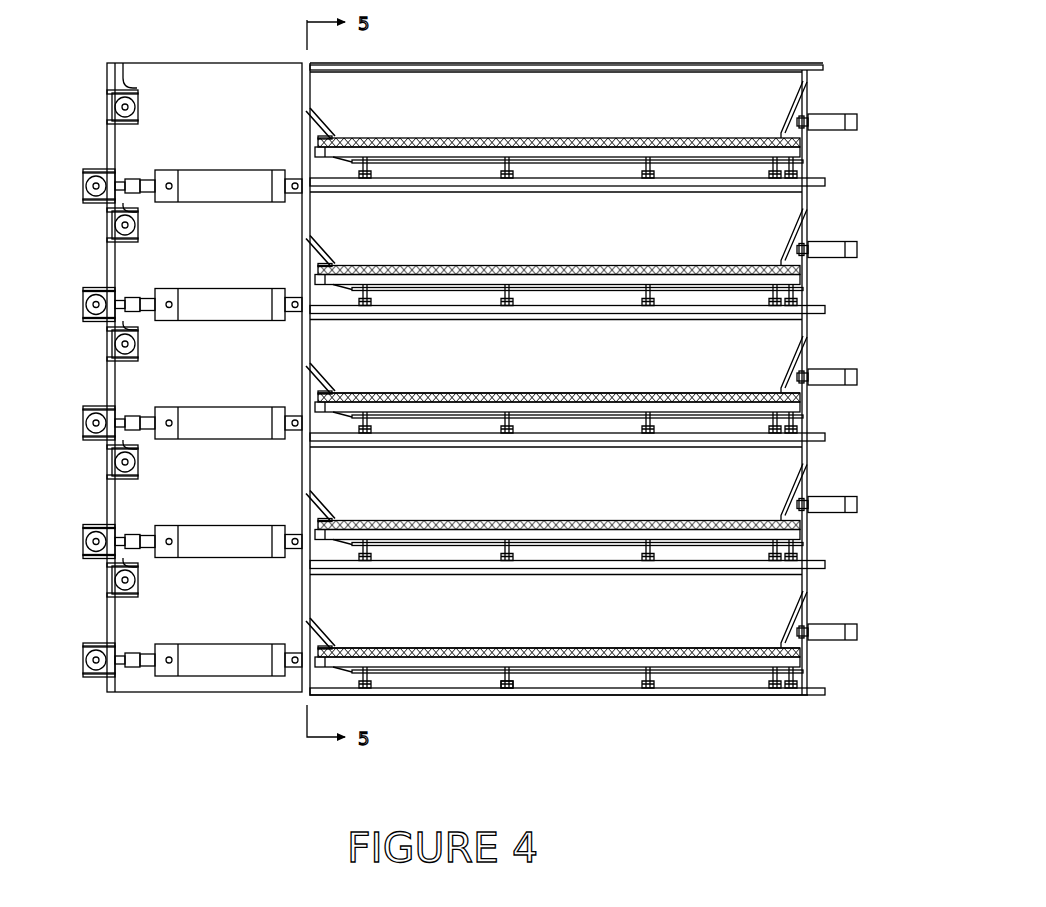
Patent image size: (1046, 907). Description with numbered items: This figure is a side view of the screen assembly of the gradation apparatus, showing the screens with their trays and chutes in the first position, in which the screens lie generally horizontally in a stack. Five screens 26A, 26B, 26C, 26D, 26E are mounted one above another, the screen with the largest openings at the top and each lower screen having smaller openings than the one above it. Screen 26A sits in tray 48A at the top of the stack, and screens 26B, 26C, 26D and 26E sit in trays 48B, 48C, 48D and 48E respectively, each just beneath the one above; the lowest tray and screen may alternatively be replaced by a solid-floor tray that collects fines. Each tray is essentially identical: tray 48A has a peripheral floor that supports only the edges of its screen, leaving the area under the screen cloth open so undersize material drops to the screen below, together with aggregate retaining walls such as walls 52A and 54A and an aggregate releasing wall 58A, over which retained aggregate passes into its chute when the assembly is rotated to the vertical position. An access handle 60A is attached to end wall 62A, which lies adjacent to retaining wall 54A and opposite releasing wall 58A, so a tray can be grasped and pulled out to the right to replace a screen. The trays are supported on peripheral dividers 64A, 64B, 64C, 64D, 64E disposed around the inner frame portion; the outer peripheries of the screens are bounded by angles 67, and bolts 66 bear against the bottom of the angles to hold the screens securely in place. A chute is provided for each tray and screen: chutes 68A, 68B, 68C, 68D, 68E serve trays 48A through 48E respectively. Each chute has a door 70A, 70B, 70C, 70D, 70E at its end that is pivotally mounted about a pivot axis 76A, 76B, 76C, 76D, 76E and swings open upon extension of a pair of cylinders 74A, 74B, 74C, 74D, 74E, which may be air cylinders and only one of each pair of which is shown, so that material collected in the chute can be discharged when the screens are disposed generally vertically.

The screen 26A is at (401, 136).
The screen 26B is at (399, 264).
The screen 26C is at (401, 391).
The screen 26D is at (401, 519).
The screen 26E is at (401, 647).
The tray 48A is at (521, 71).
The tray 48B is at (806, 231).
The tray 48C is at (806, 359).
The tray 48D is at (806, 486).
The tray 48E is at (806, 613).
The aggregate retaining wall 52A is at (590, 107).
The aggregate retaining wall 54A is at (777, 112).
The aggregate releasing wall 58A is at (324, 114).
The access handle 60A is at (838, 114).
The end wall 62A is at (810, 88).
The peripheral divider 64A is at (831, 177).
The peripheral divider 64B is at (831, 305).
The peripheral divider 64C is at (831, 432).
The peripheral divider 64D is at (831, 560).
The peripheral divider 64E is at (831, 687).
The bolt 66 is at (514, 690).
The angle 67 is at (549, 391).
The chute 68A is at (236, 132).
The chute 68B is at (236, 251).
The chute 68C is at (236, 369).
The chute 68D is at (236, 488).
The chute 68E is at (236, 607).
The door 70A is at (109, 146).
The door 70B is at (109, 264).
The door 70C is at (109, 383).
The door 70D is at (109, 502).
The door 70E is at (109, 620).
The cylinder 74A is at (236, 197).
The cylinder 74B is at (236, 315).
The cylinder 74C is at (236, 434).
The cylinder 74D is at (236, 552).
The cylinder 74E is at (236, 671).
The pivot axis 76A is at (108, 99).
The pivot axis 76B is at (108, 217).
The pivot axis 76C is at (108, 336).
The pivot axis 76D is at (108, 454).
The pivot axis 76E is at (108, 572).